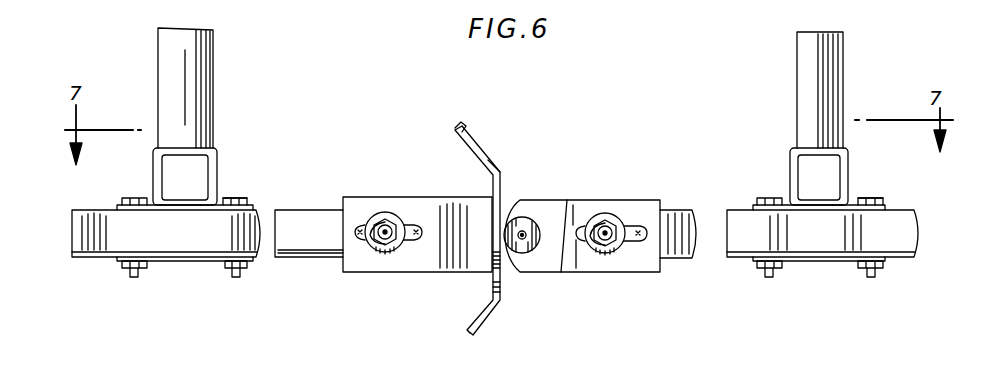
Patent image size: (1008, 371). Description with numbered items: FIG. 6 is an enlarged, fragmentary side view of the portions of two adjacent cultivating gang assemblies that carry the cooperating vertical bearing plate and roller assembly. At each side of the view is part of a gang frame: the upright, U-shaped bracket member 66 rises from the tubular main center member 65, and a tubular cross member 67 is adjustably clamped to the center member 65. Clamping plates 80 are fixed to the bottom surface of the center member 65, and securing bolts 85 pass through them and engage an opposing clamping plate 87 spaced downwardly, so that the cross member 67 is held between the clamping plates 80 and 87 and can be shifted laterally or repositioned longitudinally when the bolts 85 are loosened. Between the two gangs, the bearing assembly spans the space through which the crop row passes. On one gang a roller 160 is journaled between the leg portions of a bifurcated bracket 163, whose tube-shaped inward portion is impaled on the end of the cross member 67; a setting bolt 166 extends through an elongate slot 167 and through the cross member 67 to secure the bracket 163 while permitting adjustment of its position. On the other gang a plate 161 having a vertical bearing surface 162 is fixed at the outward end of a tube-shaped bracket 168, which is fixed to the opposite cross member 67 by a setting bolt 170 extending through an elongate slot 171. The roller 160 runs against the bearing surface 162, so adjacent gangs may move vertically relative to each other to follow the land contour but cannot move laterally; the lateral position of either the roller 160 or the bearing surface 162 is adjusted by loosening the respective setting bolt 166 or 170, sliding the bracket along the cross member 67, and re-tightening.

The main center member 65 is at (215, 150).
The U-shaped bracket member 66 is at (165, 72).
The cross member 67 is at (254, 250).
The clamping plate 80 is at (245, 205).
The securing bolt 85 is at (131, 198).
The clamping plate 87 is at (178, 263).
The roller 160 is at (523, 222).
The bearing plate 161 is at (456, 130).
The vertical bearing surface 162 is at (500, 178).
The bifurcated bracket 163 is at (553, 208).
The setting bolt 166 is at (608, 225).
The elongate slot 167 is at (640, 240).
The tube-shaped bracket 168 is at (377, 265).
The setting bolt 170 is at (370, 230).
The elongate slot 171 is at (418, 228).